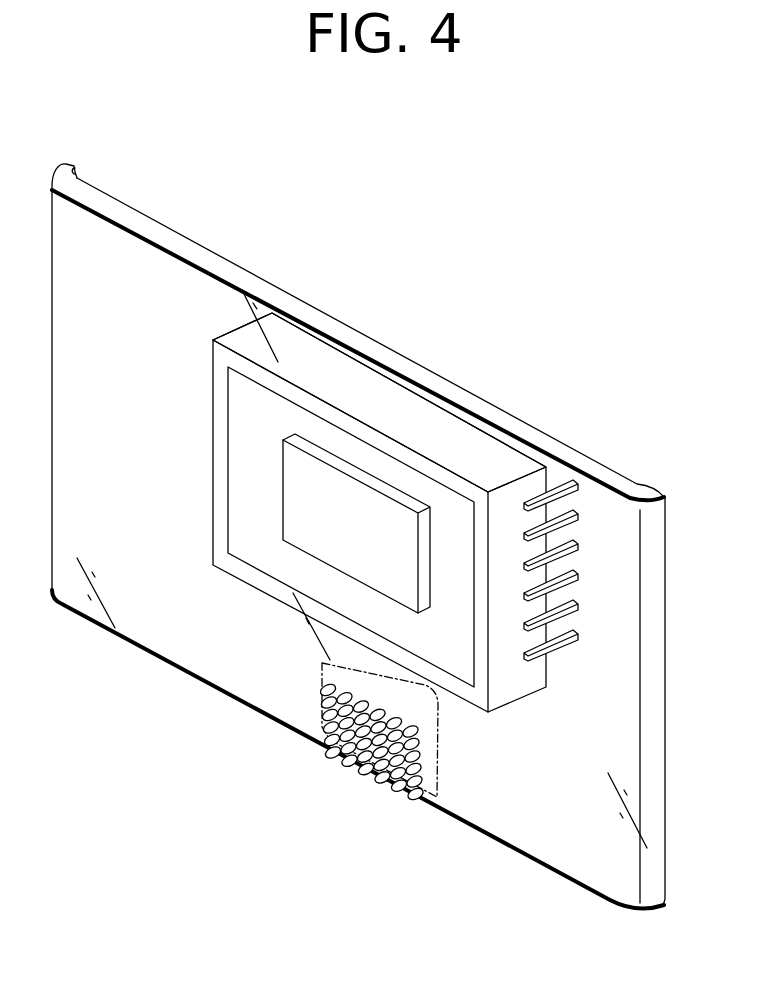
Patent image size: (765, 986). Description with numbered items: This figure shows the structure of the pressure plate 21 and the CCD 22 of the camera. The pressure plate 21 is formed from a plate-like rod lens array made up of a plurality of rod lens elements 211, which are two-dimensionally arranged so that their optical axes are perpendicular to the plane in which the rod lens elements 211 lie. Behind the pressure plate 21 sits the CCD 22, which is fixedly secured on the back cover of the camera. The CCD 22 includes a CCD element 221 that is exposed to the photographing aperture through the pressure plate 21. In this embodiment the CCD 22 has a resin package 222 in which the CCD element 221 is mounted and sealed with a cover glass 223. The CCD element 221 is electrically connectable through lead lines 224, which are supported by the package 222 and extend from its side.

The pressure plate 21 is at (178, 292).
The CCD 22 is at (420, 502).
The CCD element 221 is at (300, 493).
The resin package 222 is at (366, 392).
The cover glass 223 is at (318, 580).
The lead lines 224 is at (588, 577).
The rod lens elements 211 is at (385, 774).